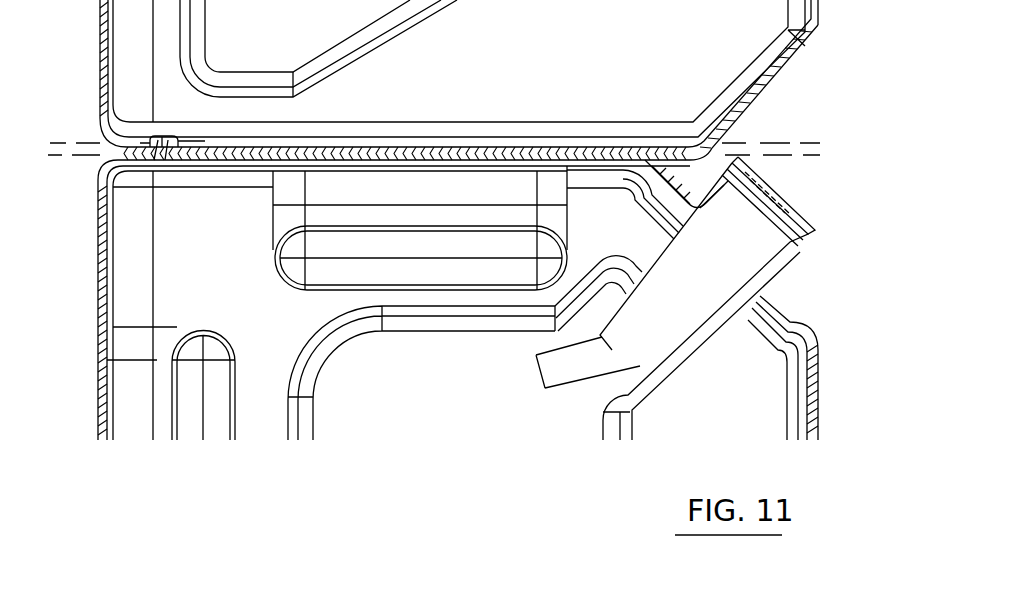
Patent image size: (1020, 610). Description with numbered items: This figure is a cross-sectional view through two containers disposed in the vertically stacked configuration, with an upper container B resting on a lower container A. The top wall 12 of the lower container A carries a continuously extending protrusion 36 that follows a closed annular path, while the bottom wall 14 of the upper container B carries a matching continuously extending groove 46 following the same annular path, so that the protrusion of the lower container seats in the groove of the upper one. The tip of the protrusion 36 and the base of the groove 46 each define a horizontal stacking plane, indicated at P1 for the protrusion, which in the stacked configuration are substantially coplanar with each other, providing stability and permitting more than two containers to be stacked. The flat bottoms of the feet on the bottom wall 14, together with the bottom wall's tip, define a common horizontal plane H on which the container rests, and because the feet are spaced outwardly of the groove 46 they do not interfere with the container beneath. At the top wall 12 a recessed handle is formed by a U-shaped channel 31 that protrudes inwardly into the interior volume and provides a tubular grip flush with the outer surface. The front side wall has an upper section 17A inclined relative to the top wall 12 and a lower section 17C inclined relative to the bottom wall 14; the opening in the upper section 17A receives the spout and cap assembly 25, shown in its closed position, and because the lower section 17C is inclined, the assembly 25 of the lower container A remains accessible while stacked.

The container B is at (814, 30).
The container A is at (818, 372).
The top wall 12 is at (140, 159).
The bottom wall 14 is at (681, 150).
The upper section 17A is at (790, 316).
The lower section 17C is at (770, 92).
The spout and cap assembly 25 is at (813, 238).
The U-shaped channel 31 is at (294, 268).
The protrusion 36 is at (162, 150).
The groove 46 is at (165, 149).
The horizontal stacking plane P1 is at (806, 142).
The horizontal plane H is at (808, 155).